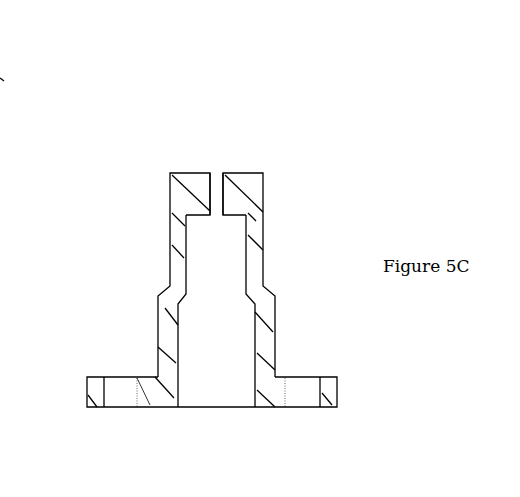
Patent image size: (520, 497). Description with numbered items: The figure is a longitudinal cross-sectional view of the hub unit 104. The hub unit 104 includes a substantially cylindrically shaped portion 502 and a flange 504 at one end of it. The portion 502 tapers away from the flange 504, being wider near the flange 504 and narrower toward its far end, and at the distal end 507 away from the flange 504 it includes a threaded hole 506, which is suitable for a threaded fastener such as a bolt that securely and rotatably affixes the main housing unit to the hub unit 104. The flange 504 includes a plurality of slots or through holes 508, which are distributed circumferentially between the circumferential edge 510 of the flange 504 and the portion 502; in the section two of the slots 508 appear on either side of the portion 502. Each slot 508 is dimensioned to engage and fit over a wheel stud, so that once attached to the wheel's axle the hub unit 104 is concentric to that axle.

The hub unit 104 is at (328, 146).
The substantially cylindrically shaped portion 502 is at (170, 222).
The flange 504 is at (158, 390).
The threaded hole 506 is at (212, 177).
The distal end 507 is at (190, 172).
The slots or through holes 508 is at (120, 390).
The circumferential edge 510 is at (80, 390).